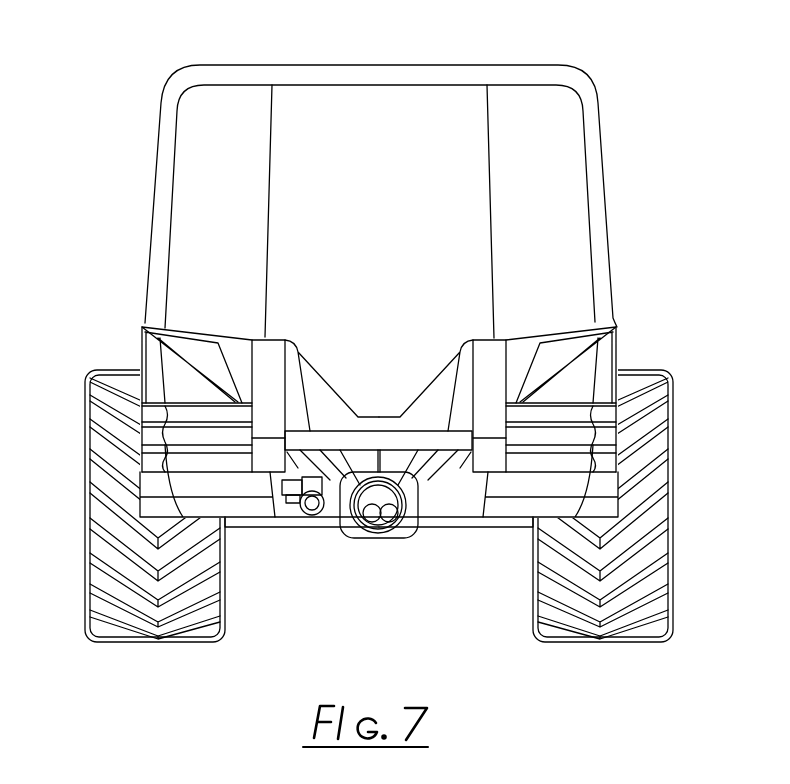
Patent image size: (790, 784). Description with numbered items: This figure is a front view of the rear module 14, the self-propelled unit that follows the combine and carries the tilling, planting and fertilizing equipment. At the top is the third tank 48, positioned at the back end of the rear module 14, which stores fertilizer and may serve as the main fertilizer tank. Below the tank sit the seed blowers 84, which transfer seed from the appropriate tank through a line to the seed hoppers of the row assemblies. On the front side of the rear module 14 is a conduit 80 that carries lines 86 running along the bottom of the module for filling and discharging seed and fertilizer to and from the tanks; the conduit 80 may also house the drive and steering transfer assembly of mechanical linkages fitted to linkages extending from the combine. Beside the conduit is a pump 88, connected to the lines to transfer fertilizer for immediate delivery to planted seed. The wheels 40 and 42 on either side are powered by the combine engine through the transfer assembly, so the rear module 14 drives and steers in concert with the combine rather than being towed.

The rear module 14 is at (641, 63).
The wheel 40 is at (670, 570).
The wheel 42 is at (112, 563).
The third tank 48 is at (290, 75).
The conduit 80 is at (377, 533).
The seed blowers 84 is at (478, 375).
The lines 86 is at (390, 517).
The pump 88 is at (312, 508).